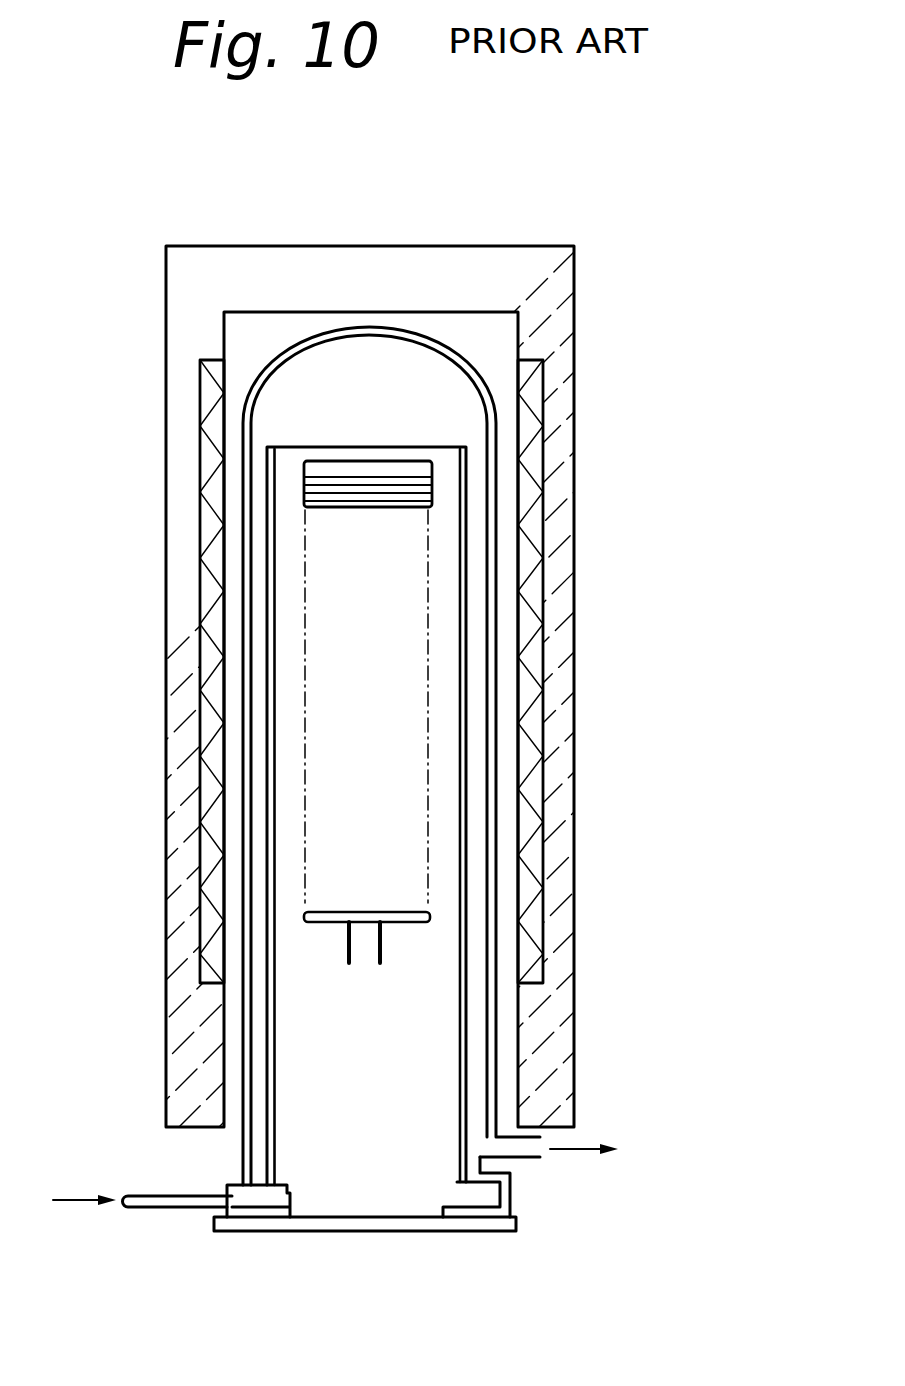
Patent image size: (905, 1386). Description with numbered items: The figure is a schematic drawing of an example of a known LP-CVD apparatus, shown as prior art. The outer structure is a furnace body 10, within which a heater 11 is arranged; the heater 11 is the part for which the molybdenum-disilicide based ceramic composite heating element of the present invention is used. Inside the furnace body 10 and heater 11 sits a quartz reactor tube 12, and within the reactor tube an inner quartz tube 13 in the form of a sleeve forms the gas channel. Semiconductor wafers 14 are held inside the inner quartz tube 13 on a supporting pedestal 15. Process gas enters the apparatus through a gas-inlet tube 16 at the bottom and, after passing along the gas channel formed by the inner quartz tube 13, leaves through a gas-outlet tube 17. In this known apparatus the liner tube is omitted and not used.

The furnace body 10 is at (565, 272).
The heater 11 is at (532, 390).
The quartz reactor tube 12 is at (497, 496).
The inner quartz tube 13 is at (468, 635).
The semiconductor wafers 14 is at (352, 462).
The supporting pedestal 15 is at (430, 918).
The gas-inlet tube 16 is at (139, 1194).
The gas-outlet tube 17 is at (523, 1158).